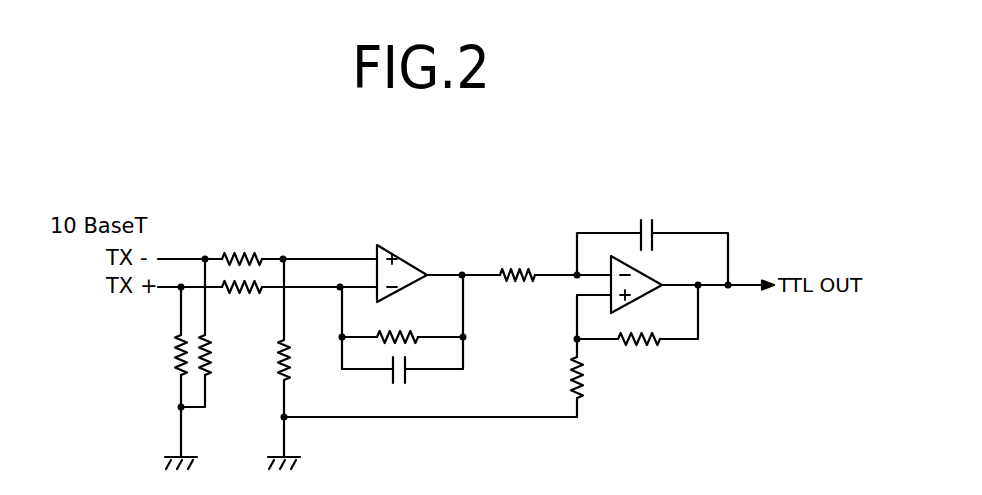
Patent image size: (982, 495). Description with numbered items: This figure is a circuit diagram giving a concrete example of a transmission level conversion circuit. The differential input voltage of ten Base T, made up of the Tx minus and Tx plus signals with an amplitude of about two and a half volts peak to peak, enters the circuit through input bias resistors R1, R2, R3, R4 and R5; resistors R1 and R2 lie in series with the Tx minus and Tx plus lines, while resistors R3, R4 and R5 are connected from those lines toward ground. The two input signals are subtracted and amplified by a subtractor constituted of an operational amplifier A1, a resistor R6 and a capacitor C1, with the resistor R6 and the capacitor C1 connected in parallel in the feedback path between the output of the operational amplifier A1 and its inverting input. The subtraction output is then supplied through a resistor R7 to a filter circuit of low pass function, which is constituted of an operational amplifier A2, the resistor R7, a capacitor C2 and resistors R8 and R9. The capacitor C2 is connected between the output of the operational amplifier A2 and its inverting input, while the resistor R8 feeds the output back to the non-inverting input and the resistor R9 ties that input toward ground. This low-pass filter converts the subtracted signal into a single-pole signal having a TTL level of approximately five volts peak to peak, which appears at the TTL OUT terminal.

The input bias resistor R1 is at (233, 252).
The input bias resistor R2 is at (243, 294).
The input bias resistor R3 is at (210, 348).
The input bias resistor R4 is at (173, 355).
The input bias resistor R5 is at (293, 365).
The resistor R6 is at (402, 332).
The resistor R7 is at (517, 268).
The resistor R8 is at (642, 347).
The resistor R9 is at (590, 375).
The capacitor C1 is at (407, 372).
The capacitor C2 is at (648, 217).
The operational amplifier A1 is at (399, 250).
The operational amplifier A2 is at (650, 293).